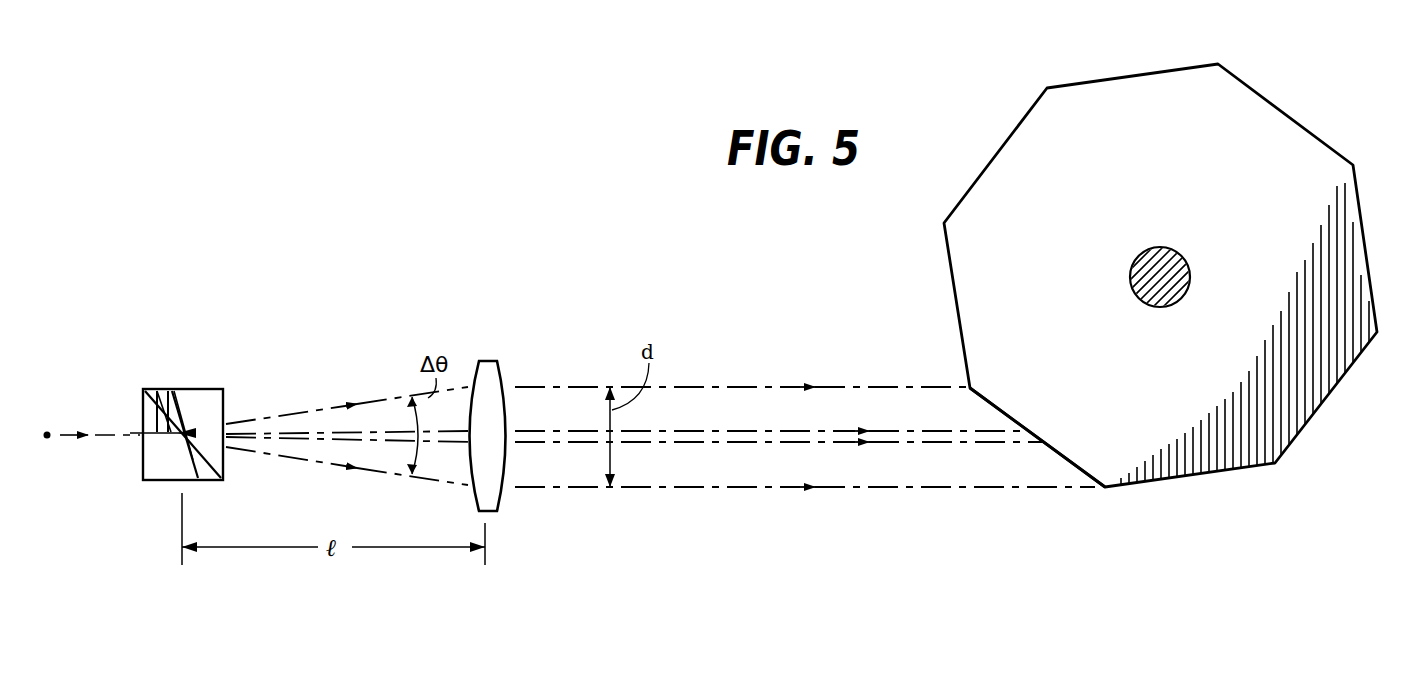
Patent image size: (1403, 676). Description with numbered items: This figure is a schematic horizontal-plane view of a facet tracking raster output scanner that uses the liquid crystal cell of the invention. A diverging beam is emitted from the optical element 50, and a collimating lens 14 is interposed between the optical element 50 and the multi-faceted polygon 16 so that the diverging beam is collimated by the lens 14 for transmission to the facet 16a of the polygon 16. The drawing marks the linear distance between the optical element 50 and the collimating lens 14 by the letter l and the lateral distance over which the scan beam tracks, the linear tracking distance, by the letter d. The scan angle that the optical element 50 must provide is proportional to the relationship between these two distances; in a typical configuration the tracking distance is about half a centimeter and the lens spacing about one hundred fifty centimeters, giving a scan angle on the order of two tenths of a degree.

The optical element 50 is at (169, 360).
The collimating lens 14 is at (498, 362).
The multi-faceted polygon 16 is at (1170, 479).
The facet 16a is at (1070, 468).